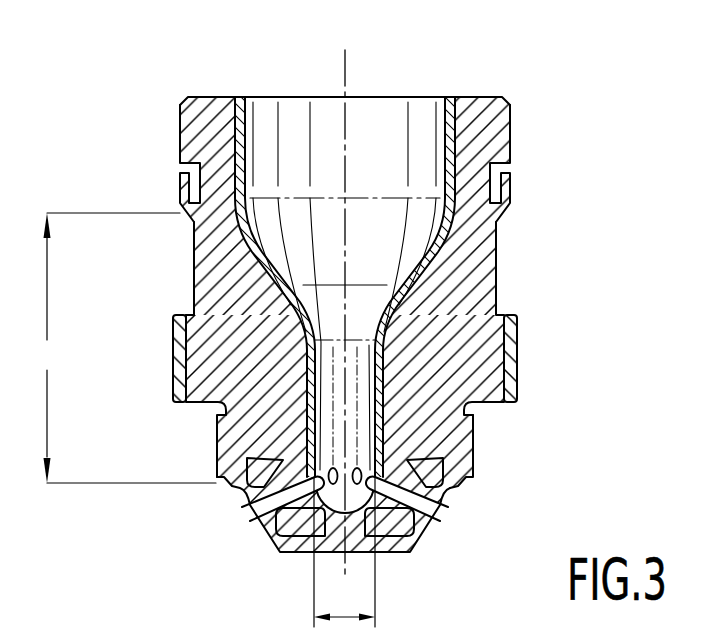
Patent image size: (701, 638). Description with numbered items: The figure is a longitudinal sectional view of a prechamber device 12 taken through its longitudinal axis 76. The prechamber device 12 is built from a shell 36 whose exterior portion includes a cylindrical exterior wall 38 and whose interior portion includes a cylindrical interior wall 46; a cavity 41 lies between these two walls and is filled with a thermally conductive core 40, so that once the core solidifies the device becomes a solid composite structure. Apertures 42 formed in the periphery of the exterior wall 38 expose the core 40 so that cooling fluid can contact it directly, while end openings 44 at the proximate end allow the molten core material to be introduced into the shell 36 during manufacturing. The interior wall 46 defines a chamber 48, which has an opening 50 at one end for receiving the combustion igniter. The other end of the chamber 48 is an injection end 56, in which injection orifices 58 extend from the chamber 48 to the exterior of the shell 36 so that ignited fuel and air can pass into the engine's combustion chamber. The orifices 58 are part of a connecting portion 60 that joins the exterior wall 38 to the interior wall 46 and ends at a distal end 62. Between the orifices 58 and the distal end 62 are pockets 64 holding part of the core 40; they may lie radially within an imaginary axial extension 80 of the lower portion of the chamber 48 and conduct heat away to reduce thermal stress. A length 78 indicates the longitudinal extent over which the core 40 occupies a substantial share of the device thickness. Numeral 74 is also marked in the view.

The prechamber device 12 is at (542, 54).
The shell 36 is at (184, 148).
The exterior wall 38 is at (174, 360).
The thermally conductive core 40 is at (496, 272).
The cavity 41 is at (466, 436).
The apertures 42 is at (180, 313).
The end openings 44 is at (202, 97).
The interior wall 46 is at (404, 275).
The chamber 48 is at (324, 106).
The opening 50 is at (268, 97).
The injection end 56 is at (338, 445).
The injection orifices 58 is at (436, 520).
The connecting portion 60 is at (280, 475).
The distal end 62 is at (410, 528).
The pockets 64 is at (292, 523).
The upper outer surface 74 is at (511, 132).
The longitudinal axis 76 is at (345, 72).
The length 78 is at (126, 348).
The imaginary axial extension 80 is at (345, 617).